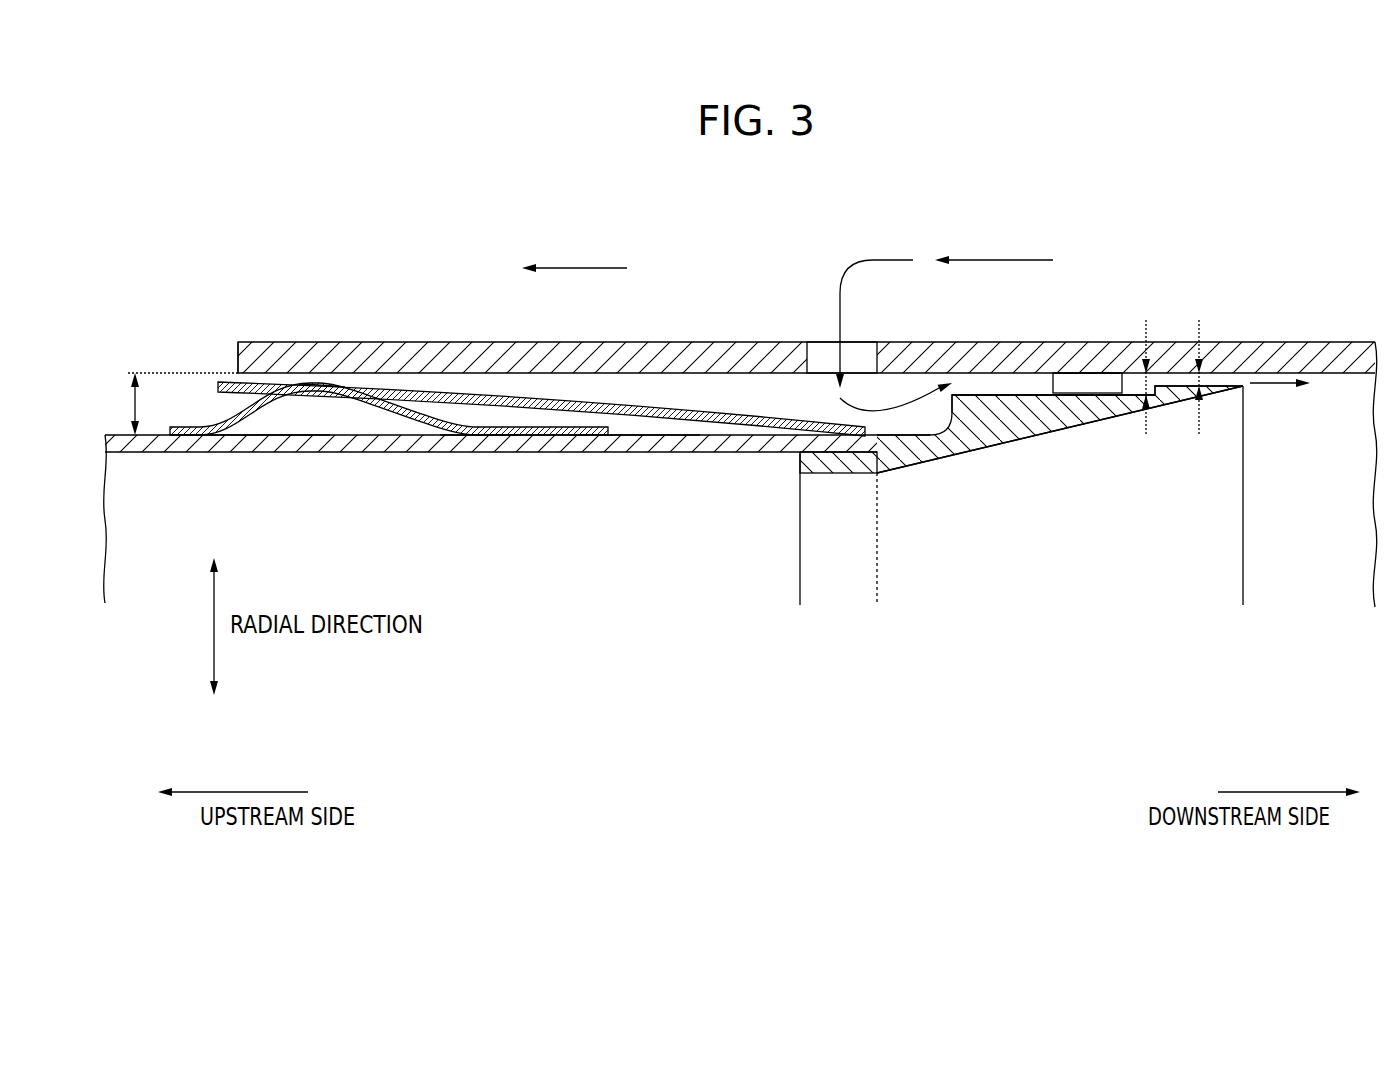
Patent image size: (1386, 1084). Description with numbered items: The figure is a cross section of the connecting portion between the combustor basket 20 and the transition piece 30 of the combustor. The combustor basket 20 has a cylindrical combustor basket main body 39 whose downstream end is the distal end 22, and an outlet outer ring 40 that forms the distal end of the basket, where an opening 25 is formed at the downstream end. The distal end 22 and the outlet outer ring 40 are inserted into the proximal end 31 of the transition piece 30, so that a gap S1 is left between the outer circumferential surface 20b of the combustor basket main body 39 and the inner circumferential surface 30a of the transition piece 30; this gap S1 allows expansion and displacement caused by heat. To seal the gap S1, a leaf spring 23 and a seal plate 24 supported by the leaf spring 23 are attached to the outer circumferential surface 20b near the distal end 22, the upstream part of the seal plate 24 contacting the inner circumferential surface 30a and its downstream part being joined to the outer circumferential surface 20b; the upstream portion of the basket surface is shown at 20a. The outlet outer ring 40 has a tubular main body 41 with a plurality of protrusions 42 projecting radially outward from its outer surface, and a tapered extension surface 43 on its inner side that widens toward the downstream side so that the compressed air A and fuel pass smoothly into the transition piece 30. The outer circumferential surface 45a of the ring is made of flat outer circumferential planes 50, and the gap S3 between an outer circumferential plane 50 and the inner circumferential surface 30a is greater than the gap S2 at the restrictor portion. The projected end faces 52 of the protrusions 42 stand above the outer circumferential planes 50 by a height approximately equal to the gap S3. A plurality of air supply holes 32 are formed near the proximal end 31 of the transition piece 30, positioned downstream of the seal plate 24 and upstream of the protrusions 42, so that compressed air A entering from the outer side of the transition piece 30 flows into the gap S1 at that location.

The combustor basket 20 is at (553, 468).
The upstream portion of plate 20 20a is at (272, 436).
The outer circumferential surface 20b is at (620, 437).
The distal end 22 is at (810, 440).
The leaf spring 23 is at (393, 437).
The seal plate 24 is at (337, 383).
The opening 25 is at (1220, 397).
The transition piece 30 is at (316, 318).
The inner circumferential surface 30a is at (490, 388).
The proximal end 31 is at (268, 355).
The air supply holes 32 is at (808, 360).
The combustor basket main body 39 is at (478, 445).
The outlet outer ring 40 is at (1103, 440).
The main body 41 is at (1030, 438).
The protrusions 42 is at (1100, 382).
The extension surface 43 is at (947, 460).
The outer circumferential surface 45a is at (983, 395).
The outer circumferential planes 50 is at (1053, 404).
The projected end faces 52 is at (1082, 365).
The gap S1 is at (167, 404).
The gap S2 is at (1214, 372).
The gap S3 is at (1157, 372).
The compressed air A is at (916, 327).